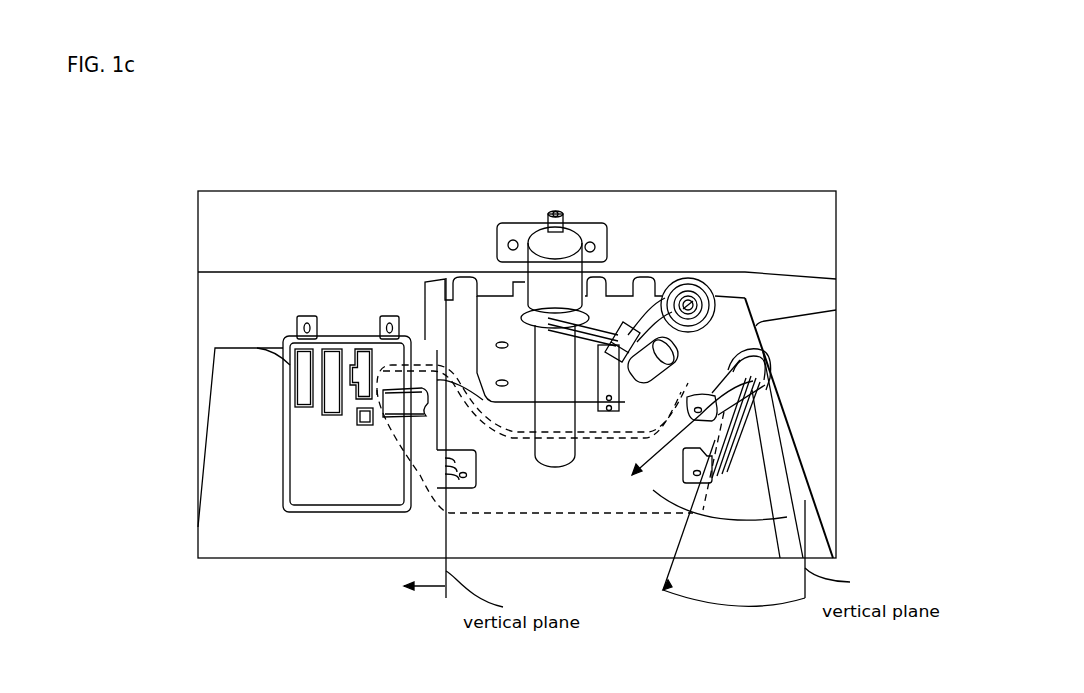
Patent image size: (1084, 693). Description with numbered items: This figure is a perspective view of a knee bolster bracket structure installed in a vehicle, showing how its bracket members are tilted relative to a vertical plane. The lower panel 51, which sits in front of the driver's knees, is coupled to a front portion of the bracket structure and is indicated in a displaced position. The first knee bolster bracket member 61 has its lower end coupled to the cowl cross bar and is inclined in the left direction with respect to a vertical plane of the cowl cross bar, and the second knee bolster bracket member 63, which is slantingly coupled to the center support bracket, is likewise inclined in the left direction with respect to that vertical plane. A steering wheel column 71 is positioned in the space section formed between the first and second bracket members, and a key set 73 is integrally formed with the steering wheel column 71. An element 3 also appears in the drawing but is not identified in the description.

The main board box 3 is at (298, 365).
The lower panel 51 is at (617, 513).
The first knee bolster bracket member 61 is at (404, 590).
The second knee bolster bracket member 63 is at (777, 378).
The steering wheel column 71 is at (575, 287).
The key set 73 is at (688, 298).